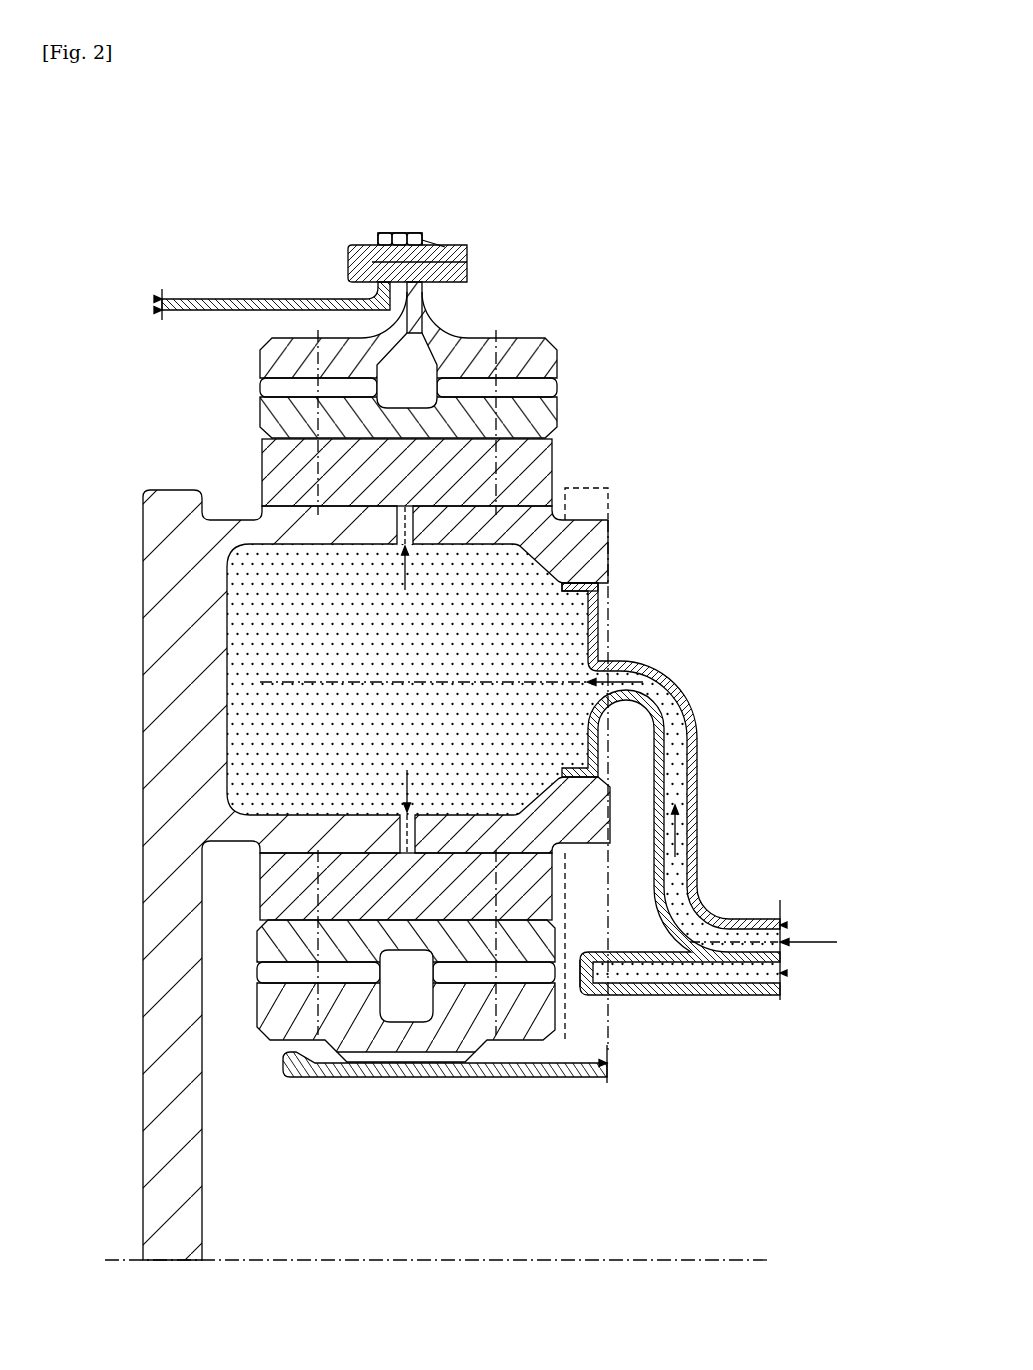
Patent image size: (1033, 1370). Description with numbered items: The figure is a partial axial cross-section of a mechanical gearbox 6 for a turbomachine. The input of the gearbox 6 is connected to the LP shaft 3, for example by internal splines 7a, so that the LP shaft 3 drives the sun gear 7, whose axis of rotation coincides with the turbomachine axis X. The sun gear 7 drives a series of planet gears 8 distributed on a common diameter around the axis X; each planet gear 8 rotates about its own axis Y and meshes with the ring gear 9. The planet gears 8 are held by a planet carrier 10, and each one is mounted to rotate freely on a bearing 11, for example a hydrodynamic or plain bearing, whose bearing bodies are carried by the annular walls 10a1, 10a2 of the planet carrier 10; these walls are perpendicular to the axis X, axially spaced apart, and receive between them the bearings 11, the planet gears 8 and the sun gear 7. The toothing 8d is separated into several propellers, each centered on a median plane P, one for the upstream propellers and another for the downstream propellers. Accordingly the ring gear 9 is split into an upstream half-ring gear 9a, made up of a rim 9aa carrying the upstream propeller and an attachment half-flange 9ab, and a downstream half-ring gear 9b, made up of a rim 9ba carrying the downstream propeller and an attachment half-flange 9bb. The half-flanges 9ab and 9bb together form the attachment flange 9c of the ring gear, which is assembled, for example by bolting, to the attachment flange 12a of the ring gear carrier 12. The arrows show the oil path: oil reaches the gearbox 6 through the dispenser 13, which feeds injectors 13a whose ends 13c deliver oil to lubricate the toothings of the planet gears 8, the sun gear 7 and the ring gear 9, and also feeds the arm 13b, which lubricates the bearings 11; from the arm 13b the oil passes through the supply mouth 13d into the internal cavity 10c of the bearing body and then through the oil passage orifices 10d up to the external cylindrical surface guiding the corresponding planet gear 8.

The gearbox 6 is at (716, 450).
The LP shaft 3 is at (555, 1070).
The sun gear 7 is at (300, 1021).
The internal splines 7a is at (373, 1063).
The planet gears 8 is at (298, 951).
The toothing 8d is at (268, 973).
The ring gear 9 is at (545, 336).
The upstream half-ring gear 9a is at (257, 358).
The rim 9aa is at (283, 350).
The attachment half-flange 9ab is at (398, 233).
The downstream half-ring gear 9b is at (545, 382).
The rim 9ba is at (480, 348).
The attachment half-flange 9bb is at (420, 240).
The attachment flange 9c is at (495, 130).
The planet carrier 10 is at (601, 519).
The wall 10a1 is at (178, 613).
The wall 10a2 is at (598, 813).
The internal cavity 10c is at (503, 748).
The oil passage orifices 10d is at (418, 524).
The bearing 11 is at (556, 479).
The ring gear carrier 12 is at (208, 299).
The attachment flange 12a is at (377, 241).
The dispenser 13 is at (784, 876).
The injectors 13a is at (708, 995).
The arm 13b is at (690, 755).
The ends 13c is at (586, 992).
The supply mouth 13d is at (592, 603).
The median plane P is at (325, 1027).
The axis of rotation of the turbomachine X is at (718, 1258).
The axis Y is at (560, 678).